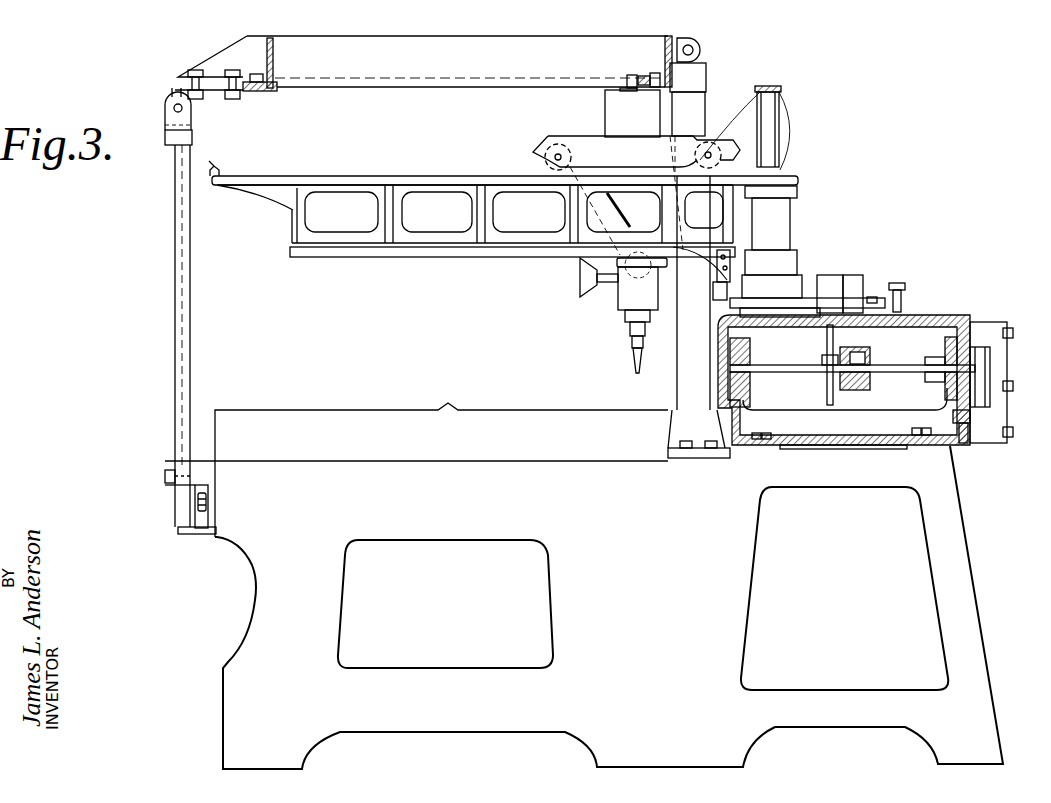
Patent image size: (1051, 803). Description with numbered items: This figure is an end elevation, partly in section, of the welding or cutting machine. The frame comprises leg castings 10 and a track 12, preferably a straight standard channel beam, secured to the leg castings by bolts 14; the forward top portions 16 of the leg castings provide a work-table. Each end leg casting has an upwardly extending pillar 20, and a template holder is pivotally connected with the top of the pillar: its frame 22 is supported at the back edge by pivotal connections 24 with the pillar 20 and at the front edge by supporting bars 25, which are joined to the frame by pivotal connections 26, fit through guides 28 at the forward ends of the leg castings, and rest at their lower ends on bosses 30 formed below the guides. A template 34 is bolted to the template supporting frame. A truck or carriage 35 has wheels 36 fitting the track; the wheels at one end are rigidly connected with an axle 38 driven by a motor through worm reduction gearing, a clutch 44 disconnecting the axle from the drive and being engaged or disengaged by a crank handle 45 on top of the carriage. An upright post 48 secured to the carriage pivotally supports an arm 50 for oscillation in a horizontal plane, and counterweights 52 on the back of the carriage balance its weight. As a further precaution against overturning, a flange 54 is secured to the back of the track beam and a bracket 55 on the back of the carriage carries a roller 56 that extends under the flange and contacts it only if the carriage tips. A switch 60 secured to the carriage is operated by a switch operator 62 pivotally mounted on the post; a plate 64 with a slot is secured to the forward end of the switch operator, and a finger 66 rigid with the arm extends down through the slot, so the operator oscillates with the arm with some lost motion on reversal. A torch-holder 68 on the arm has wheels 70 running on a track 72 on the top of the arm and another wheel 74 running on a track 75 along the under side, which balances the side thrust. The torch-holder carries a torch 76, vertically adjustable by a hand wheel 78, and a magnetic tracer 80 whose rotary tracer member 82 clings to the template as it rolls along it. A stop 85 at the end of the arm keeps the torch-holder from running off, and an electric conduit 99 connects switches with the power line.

The leg castings 10 is at (252, 613).
The track 12 is at (765, 422).
The bolts 14 is at (910, 432).
The forward top portions 16 is at (346, 410).
The pillar 20 is at (699, 317).
The frame 22 is at (421, 67).
The pivotal connections 24 is at (700, 48).
The supporting bars 25 is at (192, 292).
The pivotal connection 26 is at (186, 109).
The guides 28 is at (170, 468).
The bosses 30 is at (193, 535).
The template 34 is at (706, 76).
The carriage 35 is at (952, 311).
The wheels 36 is at (745, 347).
The axle 38 is at (804, 365).
The clutch 44 is at (872, 378).
The crank handle 45 is at (900, 288).
The upright post 48 is at (779, 133).
The arm 50 is at (465, 262).
The counterweights 52 is at (990, 322).
The flange 54 is at (975, 417).
The bracket 55 is at (1000, 368).
The roller 56 is at (965, 443).
The switch 60 is at (858, 280).
The switch operator 62 is at (818, 276).
The plate 64 is at (768, 302).
The finger 66 is at (717, 290).
The torch-holder 68 is at (636, 193).
The wheels 70 is at (547, 164).
The track 72 is at (362, 177).
The wheel 74 is at (628, 280).
The track 75 is at (546, 256).
The torch 76 is at (632, 328).
The hand wheel 78 is at (583, 283).
The magnetic tracer 80 is at (632, 113).
The rotary tracer member 82 is at (631, 75).
The stop 85 is at (218, 170).
The electric conduit 99 is at (785, 112).